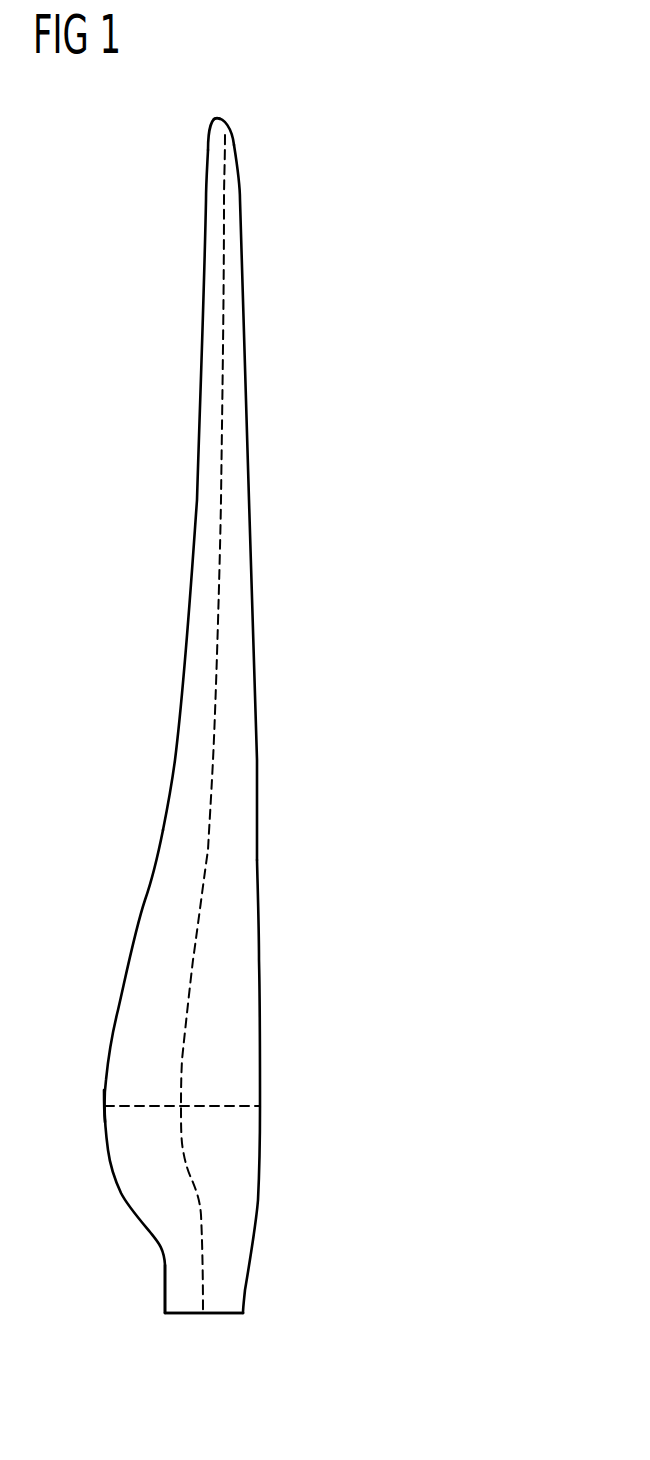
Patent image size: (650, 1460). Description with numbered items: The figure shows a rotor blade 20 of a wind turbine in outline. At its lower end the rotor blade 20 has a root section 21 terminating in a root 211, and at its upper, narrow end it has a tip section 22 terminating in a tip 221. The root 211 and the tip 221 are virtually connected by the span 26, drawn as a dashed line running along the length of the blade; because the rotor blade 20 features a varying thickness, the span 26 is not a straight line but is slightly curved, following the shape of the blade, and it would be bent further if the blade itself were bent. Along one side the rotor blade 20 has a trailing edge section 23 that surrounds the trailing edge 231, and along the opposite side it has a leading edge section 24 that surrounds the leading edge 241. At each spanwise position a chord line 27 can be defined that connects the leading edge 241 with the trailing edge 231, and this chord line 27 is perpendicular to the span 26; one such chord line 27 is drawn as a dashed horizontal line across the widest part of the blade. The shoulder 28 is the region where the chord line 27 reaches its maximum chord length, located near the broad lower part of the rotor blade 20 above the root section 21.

The rotor blade 20 is at (340, 523).
The root section 21 is at (233, 1273).
The root 211 is at (190, 1318).
The tip section 22 is at (225, 158).
The tip 221 is at (217, 118).
The trailing edge section 23 is at (180, 788).
The trailing edge 231 is at (160, 847).
The leading edge section 24 is at (245, 825).
The leading edge 241 is at (258, 877).
The span 26 is at (213, 765).
The chord line 27 is at (222, 1104).
The shoulder 28 is at (105, 1106).